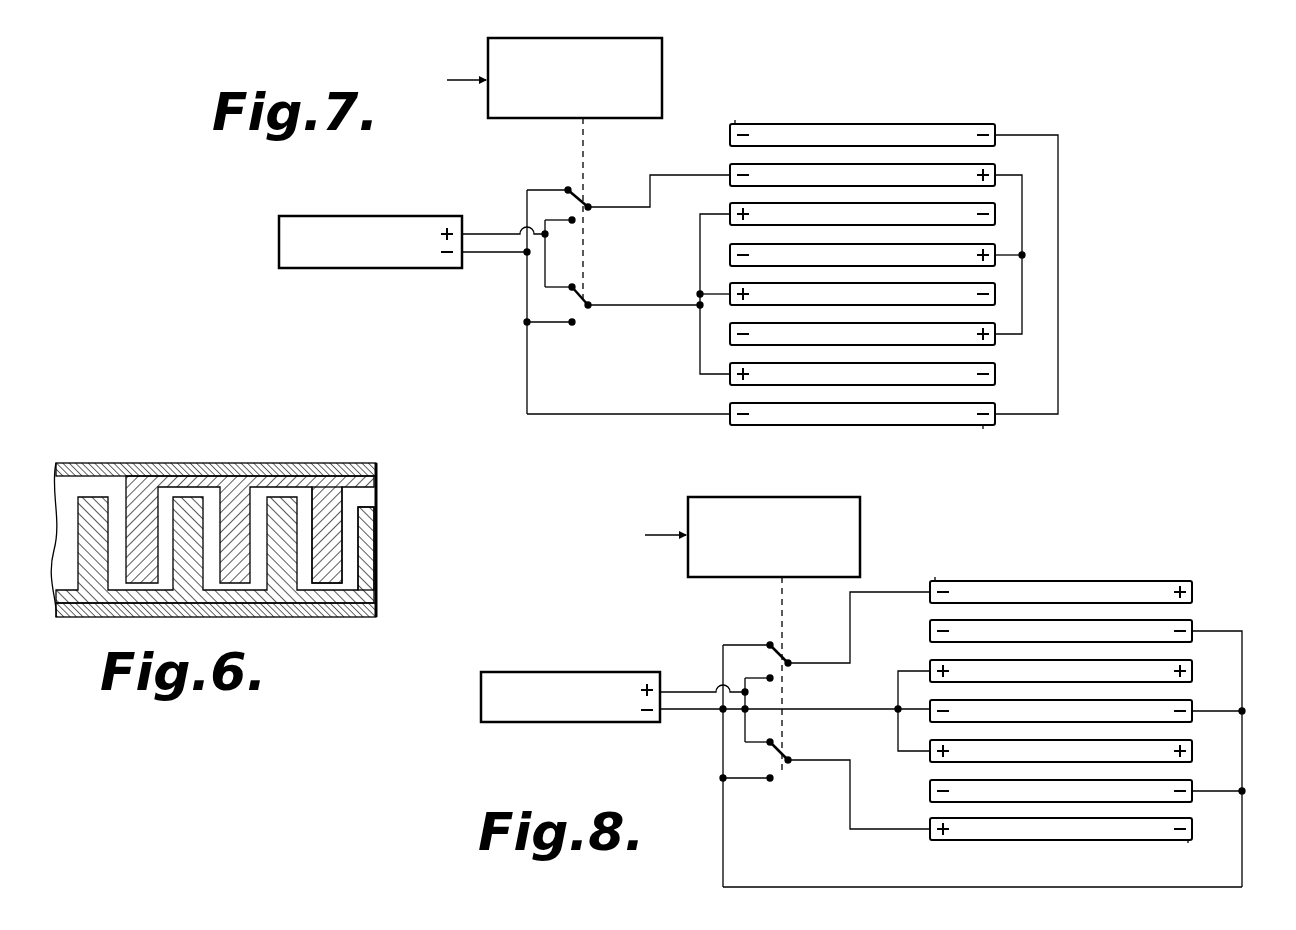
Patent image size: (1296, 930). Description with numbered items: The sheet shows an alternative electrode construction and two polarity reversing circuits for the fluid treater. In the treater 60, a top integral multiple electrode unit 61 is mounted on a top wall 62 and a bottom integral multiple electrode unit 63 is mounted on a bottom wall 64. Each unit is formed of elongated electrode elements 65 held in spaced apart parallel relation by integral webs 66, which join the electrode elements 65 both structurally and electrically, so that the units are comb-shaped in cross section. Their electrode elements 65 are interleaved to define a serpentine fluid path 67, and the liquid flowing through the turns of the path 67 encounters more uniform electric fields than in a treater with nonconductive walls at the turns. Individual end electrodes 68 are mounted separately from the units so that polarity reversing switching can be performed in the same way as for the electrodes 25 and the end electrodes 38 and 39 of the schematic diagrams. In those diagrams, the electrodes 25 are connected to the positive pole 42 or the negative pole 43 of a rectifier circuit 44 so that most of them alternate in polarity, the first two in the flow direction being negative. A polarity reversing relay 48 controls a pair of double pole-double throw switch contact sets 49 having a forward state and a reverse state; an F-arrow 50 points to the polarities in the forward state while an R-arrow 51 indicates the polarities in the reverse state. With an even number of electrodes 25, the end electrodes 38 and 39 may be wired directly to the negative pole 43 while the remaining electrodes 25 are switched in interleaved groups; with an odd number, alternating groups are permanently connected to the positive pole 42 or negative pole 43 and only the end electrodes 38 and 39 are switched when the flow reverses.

In FIG. 7, the electrodes 25 is at (730, 206).
In FIG. 8, the electrodes 25 is at (1185, 670).
In FIG. 7, the end electrode 38 is at (886, 124).
In FIG. 8, the end electrode 38 is at (1082, 585).
In FIG. 7, the end electrode 39 is at (829, 416).
In FIG. 8, the end electrode 39 is at (992, 832).
In FIG. 7, the positive pole 42 is at (469, 233).
In FIG. 8, the positive pole 42 is at (670, 690).
In FIG. 7, the negative pole 43 is at (470, 258).
In FIG. 8, the negative pole 43 is at (666, 712).
In FIG. 7, the rectifier circuit 44 is at (318, 216).
In FIG. 8, the rectifier circuit 44 is at (483, 672).
In FIG. 7, the polarity reversing relay 48 is at (488, 39).
In FIG. 8, the polarity reversing relay 48 is at (688, 578).
In FIG. 7, the switch contact sets 49 is at (592, 201).
In FIG. 8, the switch contact sets 49 is at (791, 770).
In FIG. 7, the F-arrow 50 is at (761, 90).
In FIG. 8, the F-arrow 50 is at (958, 565).
In FIG. 7, the R-arrow 51 is at (983, 430).
In FIG. 8, the R-arrow 51 is at (1188, 846).
In FIG. 6, the treater 60 is at (235, 522).
In FIG. 6, the top integral multiple electrode unit 61 is at (326, 492).
In FIG. 6, the top wall 62 is at (262, 477).
In FIG. 6, the bottom integral multiple electrode unit 63 is at (278, 594).
In FIG. 6, the bottom wall 64 is at (375, 612).
In FIG. 6, the electrode elements 65 is at (360, 543).
In FIG. 6, the integral webs 66 is at (194, 477).
In FIG. 6, the serpentine fluid path 67 is at (172, 490).
In FIG. 6, the end electrodes 68 is at (88, 599).